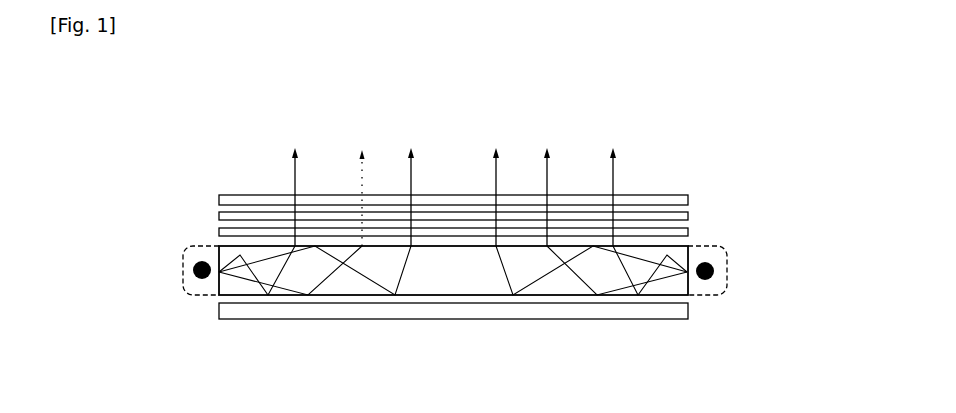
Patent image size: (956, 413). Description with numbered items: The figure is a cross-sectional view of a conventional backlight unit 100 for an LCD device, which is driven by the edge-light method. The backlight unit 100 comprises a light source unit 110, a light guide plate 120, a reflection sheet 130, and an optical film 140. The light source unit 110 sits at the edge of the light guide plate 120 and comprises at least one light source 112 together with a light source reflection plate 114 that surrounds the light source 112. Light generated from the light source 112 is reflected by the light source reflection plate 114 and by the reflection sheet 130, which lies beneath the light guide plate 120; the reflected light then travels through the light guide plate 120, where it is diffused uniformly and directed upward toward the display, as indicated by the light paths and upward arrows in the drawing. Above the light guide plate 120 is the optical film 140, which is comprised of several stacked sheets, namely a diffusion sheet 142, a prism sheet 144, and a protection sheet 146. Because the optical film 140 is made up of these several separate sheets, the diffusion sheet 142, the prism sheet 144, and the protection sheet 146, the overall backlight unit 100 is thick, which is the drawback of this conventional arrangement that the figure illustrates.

The backlight unit 100 is at (589, 139).
The light source unit 110 is at (170, 242).
The light source 112 is at (197, 280).
The light source reflection plate 114 is at (205, 245).
The light guide plate 120 is at (447, 287).
The reflection sheet 130 is at (377, 317).
The optical film 140 is at (775, 178).
The diffusion sheet 142 is at (688, 233).
The prism sheet 144 is at (688, 213).
The protection sheet 146 is at (688, 196).